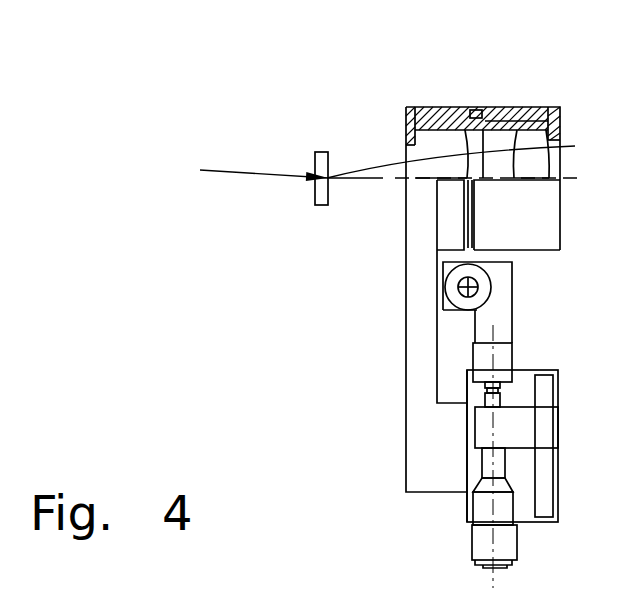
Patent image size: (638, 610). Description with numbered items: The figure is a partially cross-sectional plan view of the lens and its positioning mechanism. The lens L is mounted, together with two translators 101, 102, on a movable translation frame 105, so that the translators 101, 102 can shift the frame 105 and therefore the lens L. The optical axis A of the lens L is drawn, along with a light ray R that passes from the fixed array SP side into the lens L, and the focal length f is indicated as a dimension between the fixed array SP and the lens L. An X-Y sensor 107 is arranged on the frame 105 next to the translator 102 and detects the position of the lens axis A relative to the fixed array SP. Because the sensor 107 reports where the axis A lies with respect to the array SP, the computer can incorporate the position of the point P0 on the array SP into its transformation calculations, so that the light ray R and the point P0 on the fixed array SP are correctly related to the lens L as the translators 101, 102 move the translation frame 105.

The translator 101 is at (385, 334).
The translator 102 is at (480, 543).
The movable translation frame 105 is at (418, 398).
The X-Y sensor 107 is at (417, 447).
The lens L is at (502, 202).
The fixed array SP is at (280, 213).
The light ray R is at (398, 112).
The optical axis A is at (369, 223).
The point P0 is at (264, 154).
The focal length f is at (413, 178).